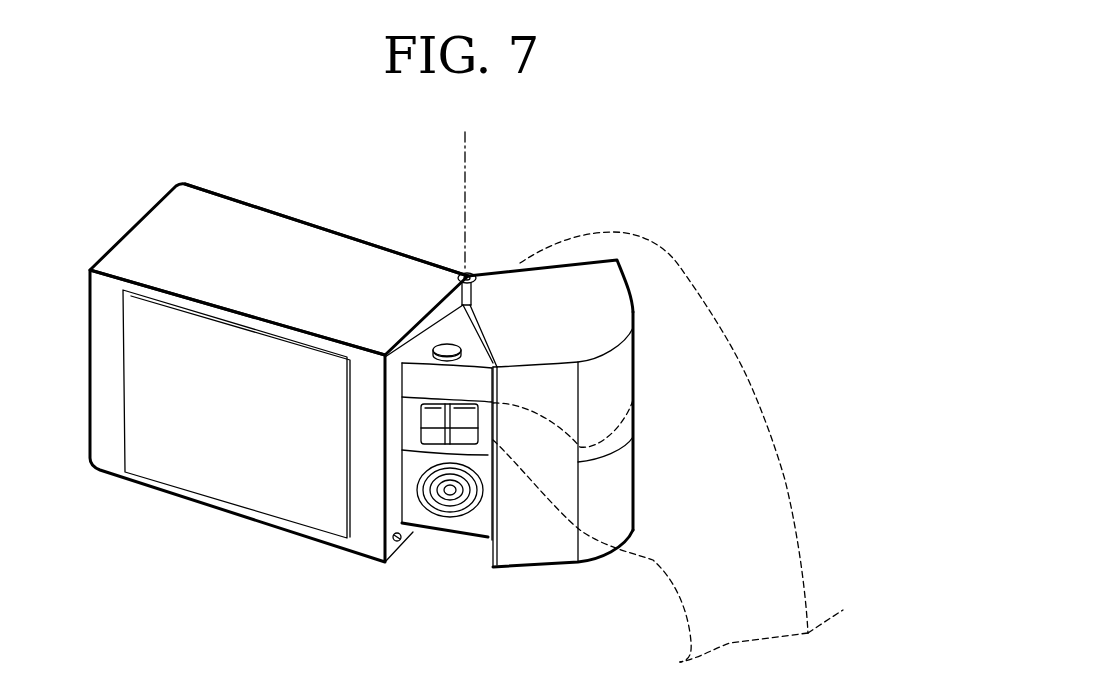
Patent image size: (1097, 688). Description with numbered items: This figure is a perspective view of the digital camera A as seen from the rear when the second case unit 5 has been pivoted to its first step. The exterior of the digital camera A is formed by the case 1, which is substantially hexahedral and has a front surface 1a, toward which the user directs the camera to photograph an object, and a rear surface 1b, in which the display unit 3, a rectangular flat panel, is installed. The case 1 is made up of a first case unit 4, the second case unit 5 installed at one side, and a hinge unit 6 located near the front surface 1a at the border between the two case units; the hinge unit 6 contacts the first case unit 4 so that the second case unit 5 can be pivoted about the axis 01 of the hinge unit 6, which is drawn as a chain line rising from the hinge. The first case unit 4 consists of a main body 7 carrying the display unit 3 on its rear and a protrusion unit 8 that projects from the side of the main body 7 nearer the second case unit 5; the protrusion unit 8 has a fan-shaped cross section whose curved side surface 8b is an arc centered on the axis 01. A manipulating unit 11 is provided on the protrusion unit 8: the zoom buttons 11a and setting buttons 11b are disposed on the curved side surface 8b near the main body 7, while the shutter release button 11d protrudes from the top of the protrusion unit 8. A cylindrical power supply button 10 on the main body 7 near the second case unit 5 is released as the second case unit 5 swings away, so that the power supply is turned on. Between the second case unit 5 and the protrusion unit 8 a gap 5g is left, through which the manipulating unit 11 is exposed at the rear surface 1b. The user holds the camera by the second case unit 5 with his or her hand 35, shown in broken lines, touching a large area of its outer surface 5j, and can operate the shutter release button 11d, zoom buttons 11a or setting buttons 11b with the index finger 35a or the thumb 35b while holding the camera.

The case 1 is at (697, 152).
The front surface of the case 1a is at (318, 221).
The rear surface of the case 1b is at (110, 455).
The display unit 3 is at (222, 483).
The first case unit 4 is at (270, 207).
The second case unit 5 is at (573, 279).
The gap of cover 5g is at (491, 545).
The outer surface of the second case unit 5j is at (620, 378).
The hinge unit 6 is at (478, 273).
The main body 7 is at (228, 194).
The protrusion unit 8 is at (455, 330).
The curved side surface 8b is at (440, 530).
The power supply button 10 is at (398, 543).
The manipulating unit 11 is at (293, 393).
The zoom buttons 11a is at (430, 431).
The setting buttons 11b is at (430, 497).
The shutter release button 11d is at (436, 352).
The hand 35 is at (740, 386).
The index finger 35a is at (610, 240).
The thumb 35b is at (550, 480).
The axis of the hinge unit 01 is at (467, 188).
The digital camera A is at (745, 178).